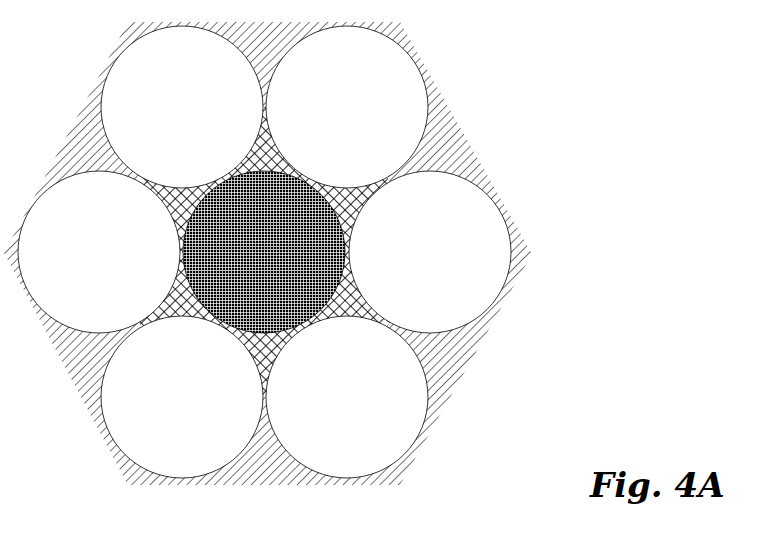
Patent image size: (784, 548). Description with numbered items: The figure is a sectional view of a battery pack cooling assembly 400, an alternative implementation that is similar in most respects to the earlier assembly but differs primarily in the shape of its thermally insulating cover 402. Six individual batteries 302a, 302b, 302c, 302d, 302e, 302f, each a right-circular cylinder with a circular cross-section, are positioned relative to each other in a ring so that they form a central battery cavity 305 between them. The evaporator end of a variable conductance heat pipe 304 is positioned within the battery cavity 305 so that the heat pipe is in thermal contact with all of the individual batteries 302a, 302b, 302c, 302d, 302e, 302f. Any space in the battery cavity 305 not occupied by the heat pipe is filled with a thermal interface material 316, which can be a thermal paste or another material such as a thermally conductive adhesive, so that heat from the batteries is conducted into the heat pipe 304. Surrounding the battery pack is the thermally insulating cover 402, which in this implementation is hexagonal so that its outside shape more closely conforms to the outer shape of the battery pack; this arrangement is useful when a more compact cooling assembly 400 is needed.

The battery pack cooling assembly 400 is at (303, 275).
The thermally insulating cover 402 is at (272, 476).
The individual battery 302a is at (182, 107).
The individual battery 302b is at (99, 252).
The individual battery 302c is at (182, 397).
The individual battery 302d is at (347, 397).
The individual battery 302e is at (430, 252).
The individual battery 302f is at (347, 107).
The variable conductance heat pipe 304 is at (264, 252).
The battery cavity 305 is at (350, 202).
The thermal interface material 316 is at (348, 252).